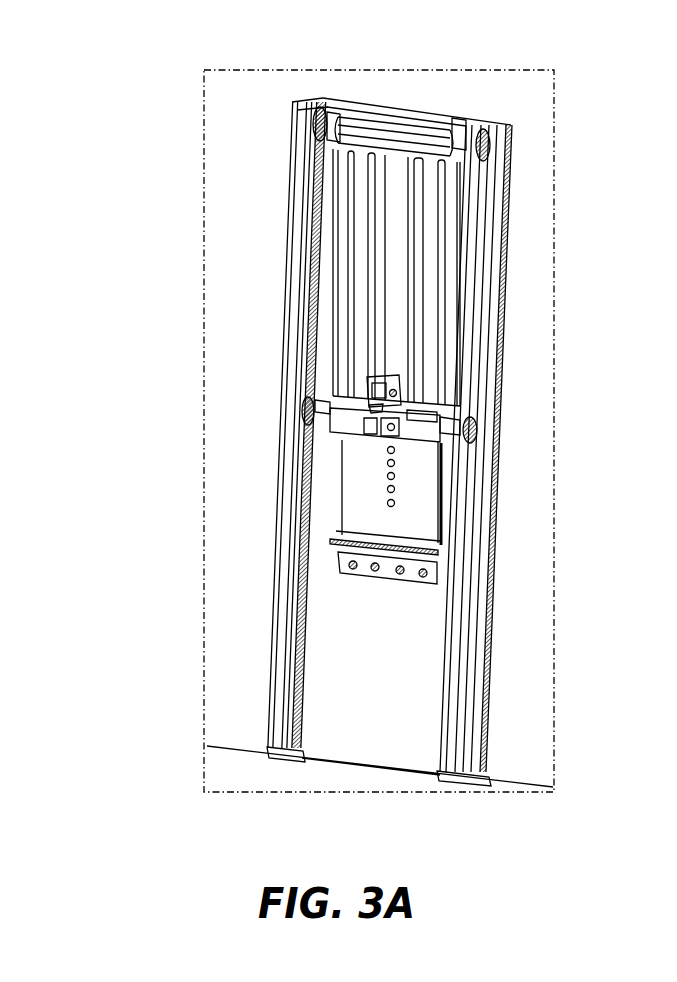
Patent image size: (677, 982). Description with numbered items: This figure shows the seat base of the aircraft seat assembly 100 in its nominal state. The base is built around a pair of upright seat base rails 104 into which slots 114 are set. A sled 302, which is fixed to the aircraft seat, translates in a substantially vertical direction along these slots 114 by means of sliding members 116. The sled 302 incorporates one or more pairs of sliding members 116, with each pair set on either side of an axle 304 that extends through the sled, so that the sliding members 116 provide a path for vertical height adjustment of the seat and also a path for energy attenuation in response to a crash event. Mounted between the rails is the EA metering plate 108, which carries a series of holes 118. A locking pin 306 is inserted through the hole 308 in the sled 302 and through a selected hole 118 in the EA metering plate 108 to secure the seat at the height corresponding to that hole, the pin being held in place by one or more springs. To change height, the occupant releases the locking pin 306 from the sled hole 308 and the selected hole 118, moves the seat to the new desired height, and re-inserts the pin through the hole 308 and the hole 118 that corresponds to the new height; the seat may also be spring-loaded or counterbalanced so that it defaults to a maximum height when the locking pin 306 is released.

The aircraft seat assembly 100 is at (157, 53).
The seat base rails 104 is at (274, 736).
The EA metering plate 108 is at (364, 514).
The slots 114 is at (444, 776).
The sliding members 116 is at (305, 104).
The hole 118 is at (388, 476).
The sled 302 is at (347, 312).
The axle 304 is at (405, 137).
The locking pin 306 is at (366, 405).
The hole 308 is at (395, 392).